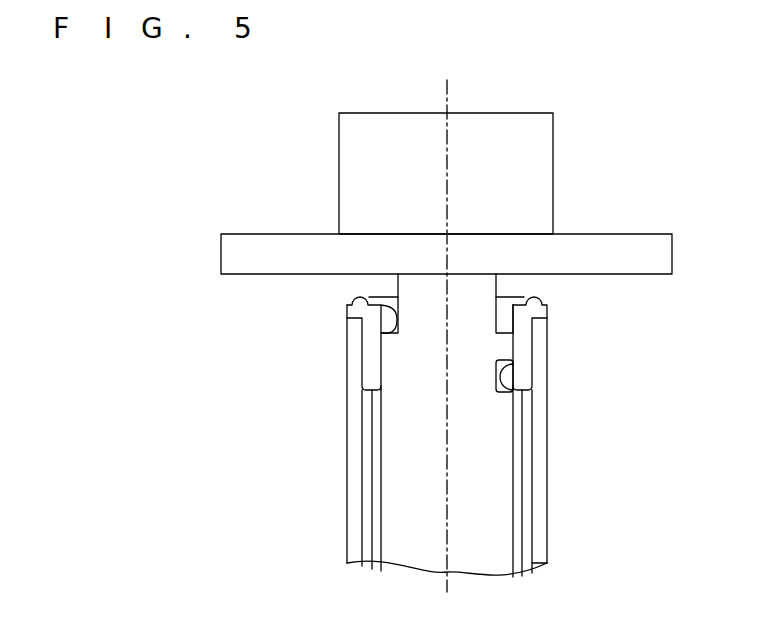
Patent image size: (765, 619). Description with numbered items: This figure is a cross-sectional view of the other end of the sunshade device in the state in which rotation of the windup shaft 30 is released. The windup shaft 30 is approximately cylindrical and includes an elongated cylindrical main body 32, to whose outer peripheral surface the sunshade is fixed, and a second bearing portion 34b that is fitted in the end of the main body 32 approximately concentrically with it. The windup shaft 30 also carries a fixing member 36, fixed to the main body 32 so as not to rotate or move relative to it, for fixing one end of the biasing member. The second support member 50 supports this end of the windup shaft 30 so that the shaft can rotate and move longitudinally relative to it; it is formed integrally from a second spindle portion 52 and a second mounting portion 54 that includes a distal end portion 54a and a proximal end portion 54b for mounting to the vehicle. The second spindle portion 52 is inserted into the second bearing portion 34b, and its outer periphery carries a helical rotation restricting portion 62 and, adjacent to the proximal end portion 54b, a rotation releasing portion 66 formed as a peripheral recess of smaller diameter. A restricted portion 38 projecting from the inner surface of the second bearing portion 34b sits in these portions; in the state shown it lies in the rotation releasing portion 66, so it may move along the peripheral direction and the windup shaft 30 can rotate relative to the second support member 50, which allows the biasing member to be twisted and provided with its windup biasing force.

The windup shaft 30 is at (556, 525).
The main body 32 is at (549, 418).
The second bearing portion 34b is at (360, 351).
The fixing member 36 is at (532, 338).
The restricted portion 38 is at (383, 300).
The second support member 50 is at (306, 198).
The second spindle portion 52 is at (513, 476).
The second mounting portion 54 is at (655, 138).
The distal end portion 54a is at (553, 157).
The proximal end portion 54b is at (594, 233).
The rotation restricting portion 62 is at (503, 375).
The rotation releasing portion 66 is at (496, 284).